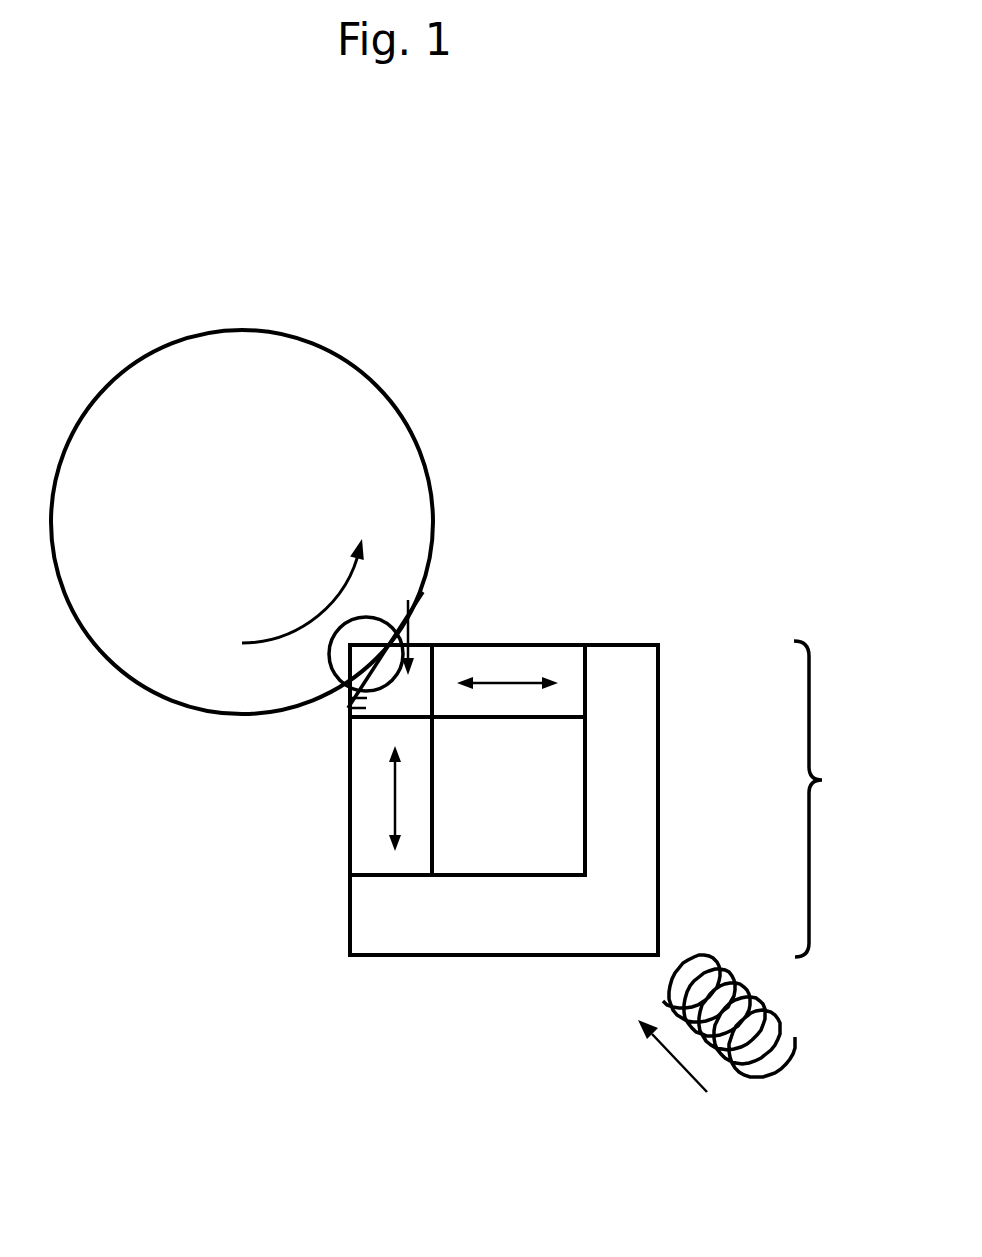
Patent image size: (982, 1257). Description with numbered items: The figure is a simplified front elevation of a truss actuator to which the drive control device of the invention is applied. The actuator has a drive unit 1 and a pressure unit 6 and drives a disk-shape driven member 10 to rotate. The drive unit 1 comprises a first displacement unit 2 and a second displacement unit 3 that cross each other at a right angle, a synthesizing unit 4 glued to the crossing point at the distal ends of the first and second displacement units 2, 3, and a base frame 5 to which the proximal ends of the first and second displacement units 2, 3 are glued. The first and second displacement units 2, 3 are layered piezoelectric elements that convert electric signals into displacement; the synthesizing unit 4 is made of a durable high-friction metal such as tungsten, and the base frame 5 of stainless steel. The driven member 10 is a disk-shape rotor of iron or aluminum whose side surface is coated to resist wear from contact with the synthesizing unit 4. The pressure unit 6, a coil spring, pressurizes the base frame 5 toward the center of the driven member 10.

The drive unit 1 is at (822, 799).
The first displacement unit 2 is at (473, 657).
The second displacement unit 3 is at (363, 815).
The synthesizing unit 4 is at (350, 712).
The base frame 5 is at (658, 843).
The pressure unit 6 is at (804, 1009).
The driven member 10 is at (340, 386).